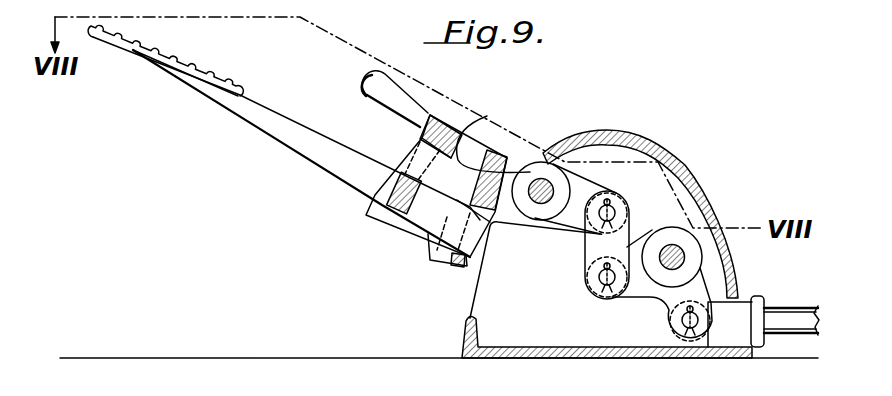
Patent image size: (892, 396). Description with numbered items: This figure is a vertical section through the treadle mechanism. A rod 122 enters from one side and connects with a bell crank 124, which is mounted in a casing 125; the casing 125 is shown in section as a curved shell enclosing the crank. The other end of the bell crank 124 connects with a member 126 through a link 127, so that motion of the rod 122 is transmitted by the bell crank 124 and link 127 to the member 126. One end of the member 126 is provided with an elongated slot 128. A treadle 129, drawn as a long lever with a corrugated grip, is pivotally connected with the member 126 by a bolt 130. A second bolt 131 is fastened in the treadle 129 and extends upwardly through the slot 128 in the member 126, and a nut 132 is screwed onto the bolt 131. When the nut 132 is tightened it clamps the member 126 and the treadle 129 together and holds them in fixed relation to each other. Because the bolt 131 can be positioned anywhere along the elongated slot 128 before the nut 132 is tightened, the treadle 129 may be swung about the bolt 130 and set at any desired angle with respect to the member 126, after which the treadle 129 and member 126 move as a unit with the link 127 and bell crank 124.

The rod 122 is at (785, 317).
The bell crank 124 is at (668, 296).
The casing 125 is at (712, 192).
The member 126 is at (572, 218).
The link 127 is at (593, 247).
The elongated slot 128 is at (404, 147).
The treadle 129 is at (270, 113).
The bolt 130 is at (445, 258).
The bolt 131 is at (395, 214).
The nut 132 is at (446, 122).